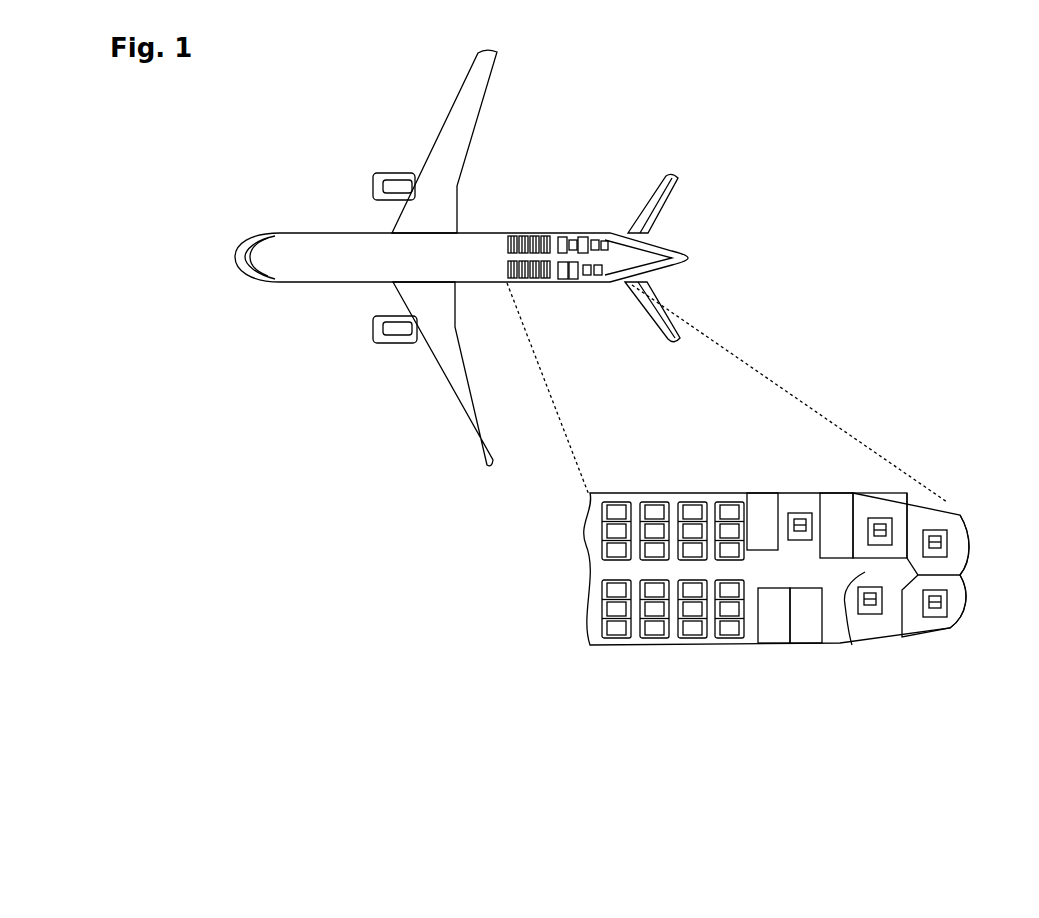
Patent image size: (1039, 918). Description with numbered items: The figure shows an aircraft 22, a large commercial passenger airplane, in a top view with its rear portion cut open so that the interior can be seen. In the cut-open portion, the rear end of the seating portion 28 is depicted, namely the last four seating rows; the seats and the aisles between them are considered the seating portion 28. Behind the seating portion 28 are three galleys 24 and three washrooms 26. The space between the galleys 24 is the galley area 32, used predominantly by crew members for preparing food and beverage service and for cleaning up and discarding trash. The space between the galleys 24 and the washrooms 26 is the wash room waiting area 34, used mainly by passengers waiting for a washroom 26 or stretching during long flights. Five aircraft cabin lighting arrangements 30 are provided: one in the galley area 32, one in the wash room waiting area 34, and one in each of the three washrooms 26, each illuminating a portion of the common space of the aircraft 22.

The aircraft 22 is at (584, 155).
The galley 24 is at (760, 512).
The washroom 26 is at (891, 535).
The seating portion 28 is at (678, 567).
The aircraft cabin lighting arrangement 30 is at (804, 514).
The galley area 32 is at (783, 572).
The wash room waiting area 34 is at (852, 645).